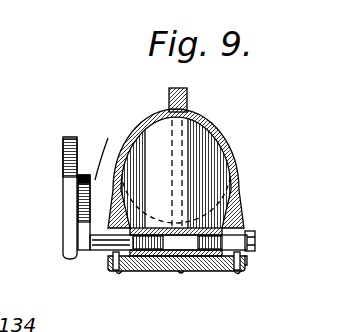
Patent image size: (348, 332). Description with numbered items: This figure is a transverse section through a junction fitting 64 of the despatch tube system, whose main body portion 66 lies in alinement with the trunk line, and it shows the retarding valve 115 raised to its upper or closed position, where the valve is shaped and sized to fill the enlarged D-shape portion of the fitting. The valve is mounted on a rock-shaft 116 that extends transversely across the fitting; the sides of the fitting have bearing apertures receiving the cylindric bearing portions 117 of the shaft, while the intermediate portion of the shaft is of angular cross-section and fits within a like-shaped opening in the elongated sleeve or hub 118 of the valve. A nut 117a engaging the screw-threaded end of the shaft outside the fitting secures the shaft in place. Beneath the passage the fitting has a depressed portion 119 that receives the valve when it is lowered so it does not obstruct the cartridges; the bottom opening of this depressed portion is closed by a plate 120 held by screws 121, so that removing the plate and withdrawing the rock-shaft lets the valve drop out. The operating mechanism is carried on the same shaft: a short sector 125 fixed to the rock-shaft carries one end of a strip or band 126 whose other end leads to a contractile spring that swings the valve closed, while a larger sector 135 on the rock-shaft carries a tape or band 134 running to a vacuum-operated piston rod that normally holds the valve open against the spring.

The junction fitting 64 is at (148, 104).
The main body portion 66 is at (208, 135).
The valve 115 is at (200, 147).
The rock-shaft 116 is at (167, 241).
The cylindric bearing portions 117 is at (233, 240).
The nut 117a is at (305, 233).
The sleeve or hub 118 is at (196, 258).
The depressed portion 119 is at (138, 256).
The plate 120 is at (246, 265).
The screws 121 is at (115, 268).
The short sector 125 is at (107, 148).
The strip or band 126 is at (83, 179).
The tape or band 134 is at (75, 147).
The larger sector 135 is at (64, 165).